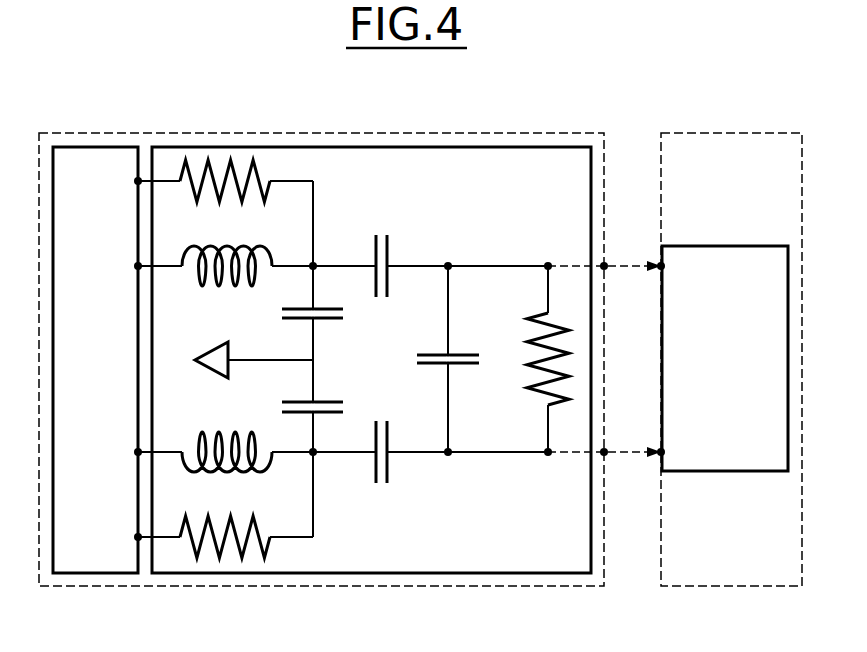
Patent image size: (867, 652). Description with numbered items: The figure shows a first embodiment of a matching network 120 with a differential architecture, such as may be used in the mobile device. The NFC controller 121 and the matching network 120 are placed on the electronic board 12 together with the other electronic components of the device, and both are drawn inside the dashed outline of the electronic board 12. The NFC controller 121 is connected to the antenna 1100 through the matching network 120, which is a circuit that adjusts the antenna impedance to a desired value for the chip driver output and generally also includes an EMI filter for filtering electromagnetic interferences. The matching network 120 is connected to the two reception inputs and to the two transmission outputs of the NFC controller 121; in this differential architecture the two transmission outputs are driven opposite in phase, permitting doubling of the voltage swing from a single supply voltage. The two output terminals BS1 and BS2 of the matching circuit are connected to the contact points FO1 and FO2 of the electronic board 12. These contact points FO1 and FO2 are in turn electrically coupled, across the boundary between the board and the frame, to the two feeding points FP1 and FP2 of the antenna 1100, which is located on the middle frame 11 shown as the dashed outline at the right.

The electronic board 12 is at (320, 587).
The NFC controller 121 is at (93, 147).
The matching network 120 is at (370, 147).
The middle frame 11 is at (731, 587).
The antenna 1100 is at (723, 246).
The output terminal BS1 is at (548, 264).
The output terminal BS2 is at (548, 454).
The contact point FO1 is at (605, 268).
The contact point FO2 is at (605, 451).
The feeding point FP1 is at (659, 264).
The feeding point FP2 is at (660, 454).